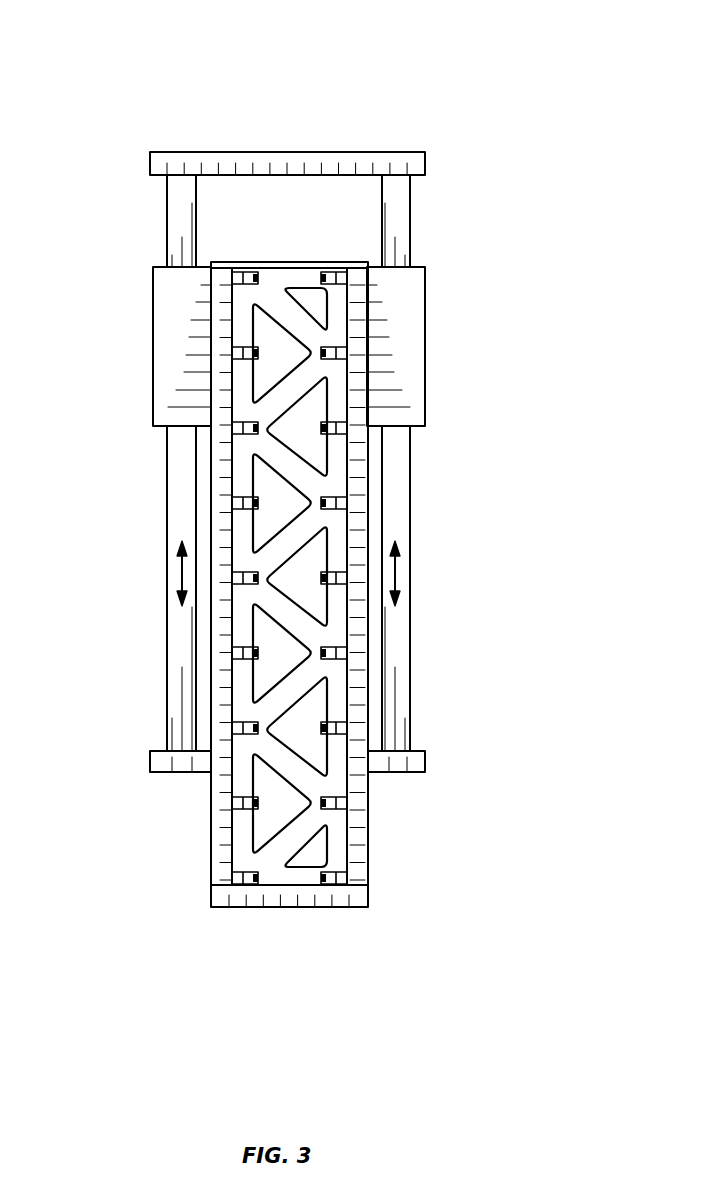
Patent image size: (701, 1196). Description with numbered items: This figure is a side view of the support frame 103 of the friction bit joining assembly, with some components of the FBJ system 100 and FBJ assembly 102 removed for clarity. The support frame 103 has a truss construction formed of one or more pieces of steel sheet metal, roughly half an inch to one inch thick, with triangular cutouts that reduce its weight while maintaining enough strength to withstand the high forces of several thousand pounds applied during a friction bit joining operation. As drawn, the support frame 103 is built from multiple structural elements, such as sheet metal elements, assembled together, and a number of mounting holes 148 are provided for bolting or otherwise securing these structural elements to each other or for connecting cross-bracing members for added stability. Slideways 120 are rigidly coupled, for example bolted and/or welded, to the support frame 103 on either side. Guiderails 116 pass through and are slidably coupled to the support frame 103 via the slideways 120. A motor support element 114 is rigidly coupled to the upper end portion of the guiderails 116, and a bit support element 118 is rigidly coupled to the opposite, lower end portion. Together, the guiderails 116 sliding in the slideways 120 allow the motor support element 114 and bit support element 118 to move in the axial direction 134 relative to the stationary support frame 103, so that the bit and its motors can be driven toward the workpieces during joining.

The FBJ system 100 is at (140, 107).
The FBJ assembly 102 is at (488, 276).
The support frame 103 is at (258, 922).
The motor support element 114 is at (418, 164).
The guiderails 116 is at (398, 242).
The bit support element 118 is at (160, 766).
The slideways 120 is at (412, 350).
The axial direction 134 is at (180, 570).
The mounting holes 148 is at (342, 803).